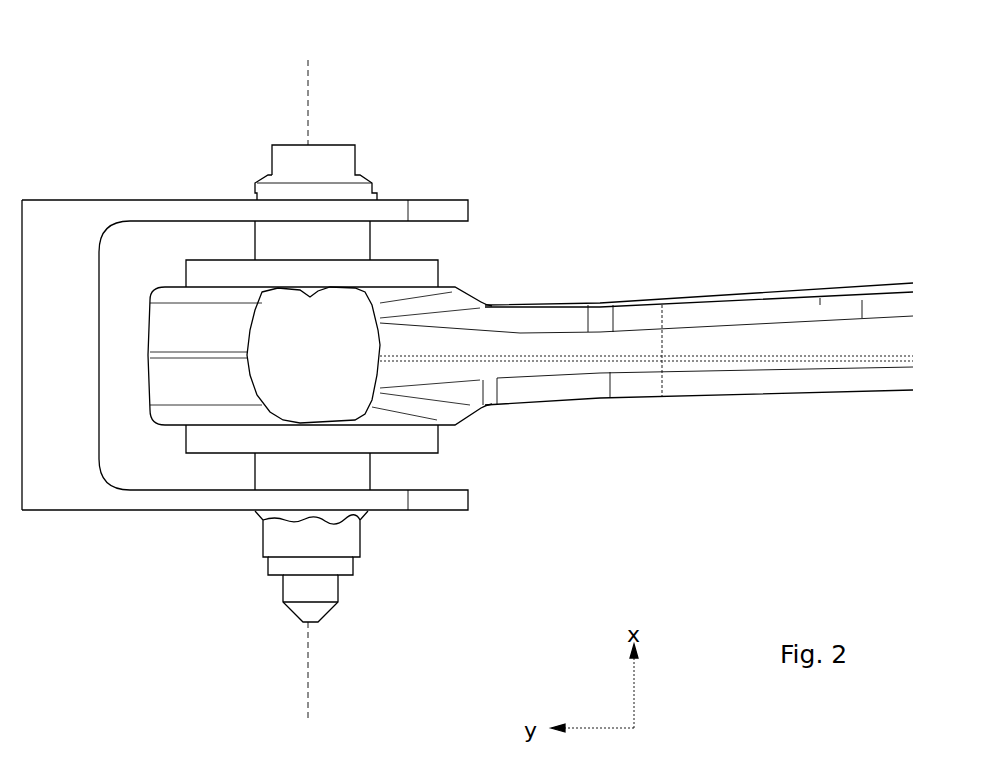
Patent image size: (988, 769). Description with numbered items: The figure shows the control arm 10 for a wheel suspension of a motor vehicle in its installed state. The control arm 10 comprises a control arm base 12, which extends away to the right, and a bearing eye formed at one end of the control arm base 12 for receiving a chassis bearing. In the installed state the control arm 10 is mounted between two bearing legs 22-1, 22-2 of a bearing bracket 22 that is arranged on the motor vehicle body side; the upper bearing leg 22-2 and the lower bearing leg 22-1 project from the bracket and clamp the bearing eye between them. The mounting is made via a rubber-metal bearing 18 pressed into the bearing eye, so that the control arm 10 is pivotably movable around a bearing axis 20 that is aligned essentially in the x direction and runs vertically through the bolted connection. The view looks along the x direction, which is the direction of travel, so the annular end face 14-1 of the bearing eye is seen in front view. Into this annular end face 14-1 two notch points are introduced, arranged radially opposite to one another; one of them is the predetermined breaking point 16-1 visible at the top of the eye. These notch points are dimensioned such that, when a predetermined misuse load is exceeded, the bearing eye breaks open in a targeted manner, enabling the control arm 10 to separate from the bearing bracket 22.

The control arm 10 is at (740, 268).
The control arm base 12 is at (887, 330).
The annular end face of the bearing eye 14-1 is at (436, 285).
The predetermined breaking point 16-1 is at (300, 287).
The rubber-metal bearing 18 is at (412, 272).
The bearing axis 20 is at (308, 76).
The bearing bracket 22 is at (287, 386).
The bearing leg 22-1 is at (395, 503).
The bearing leg 22-2 is at (392, 199).